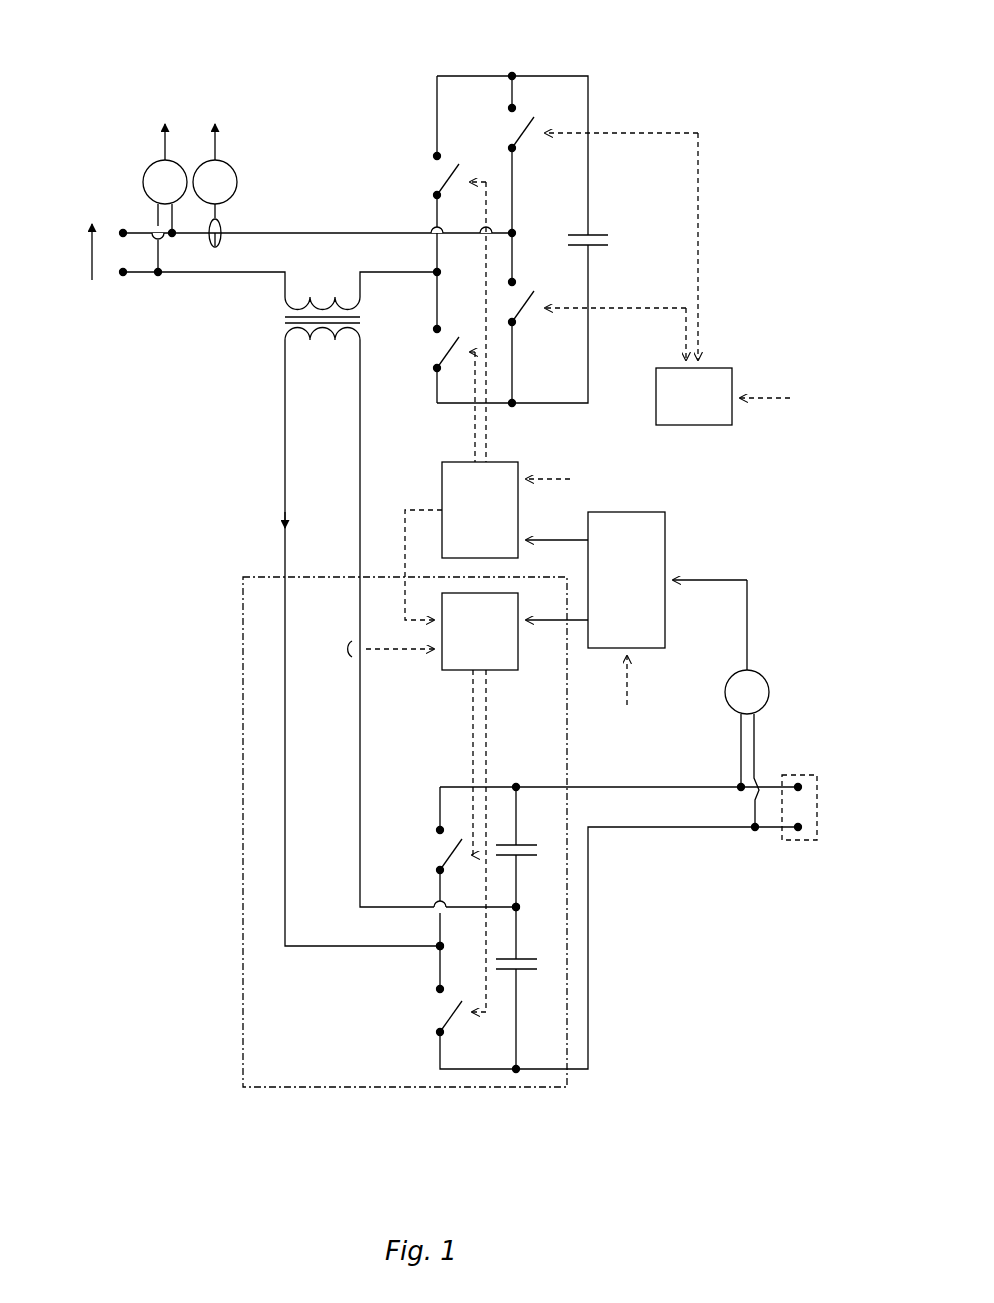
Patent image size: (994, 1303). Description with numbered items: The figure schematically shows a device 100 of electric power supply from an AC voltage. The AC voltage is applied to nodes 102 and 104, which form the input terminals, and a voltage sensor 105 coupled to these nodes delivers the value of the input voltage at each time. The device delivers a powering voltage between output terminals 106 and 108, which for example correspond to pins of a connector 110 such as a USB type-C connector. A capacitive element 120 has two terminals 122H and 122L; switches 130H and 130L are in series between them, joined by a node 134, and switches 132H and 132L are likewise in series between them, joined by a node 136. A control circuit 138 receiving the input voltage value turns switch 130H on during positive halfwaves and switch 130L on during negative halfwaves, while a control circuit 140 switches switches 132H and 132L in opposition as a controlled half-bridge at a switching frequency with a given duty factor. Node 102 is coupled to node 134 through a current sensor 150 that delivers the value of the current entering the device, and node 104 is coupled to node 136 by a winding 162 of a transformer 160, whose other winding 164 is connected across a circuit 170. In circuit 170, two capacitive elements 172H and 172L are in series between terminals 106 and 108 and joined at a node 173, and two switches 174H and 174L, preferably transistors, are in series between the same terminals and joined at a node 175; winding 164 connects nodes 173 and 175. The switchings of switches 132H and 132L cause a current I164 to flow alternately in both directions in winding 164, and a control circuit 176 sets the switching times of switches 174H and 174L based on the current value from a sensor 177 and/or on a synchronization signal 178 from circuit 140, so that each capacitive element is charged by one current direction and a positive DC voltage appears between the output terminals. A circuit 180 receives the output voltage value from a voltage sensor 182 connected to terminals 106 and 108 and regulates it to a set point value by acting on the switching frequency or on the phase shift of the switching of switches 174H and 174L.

The device 100 is at (178, 52).
The node 102 is at (123, 232).
The node 104 is at (123, 273).
The voltage sensor 105 is at (145, 175).
The current sensor 150 is at (236, 192).
The terminal 106 is at (817, 787).
The terminal 108 is at (817, 827).
The connector 110 is at (798, 840).
The capacitive element 120 is at (588, 240).
The terminal 122H is at (588, 100).
The terminal 122L is at (588, 340).
The switch 130H is at (505, 117).
The switch 130L is at (540, 290).
The switch 132H is at (430, 176).
The switch 132L is at (430, 348).
The node 134 is at (514, 232).
The node 136 is at (437, 258).
The control circuit 138 is at (700, 425).
The control circuit 140 is at (500, 475).
The transformer 160 is at (278, 335).
The winding 162 is at (285, 297).
The winding 164 is at (310, 345).
The current I164 is at (329, 643).
The circuit 170 is at (243, 605).
The capacitive element 172H is at (588, 870).
The capacitive element 172L is at (537, 969).
The node 173 is at (520, 906).
The switch 174H is at (430, 840).
The switch 174L is at (430, 1017).
The node 175 is at (438, 950).
The control circuit 176 is at (500, 673).
The sensor 177 is at (395, 660).
The signal 178 is at (405, 535).
The circuit 180 is at (648, 525).
The voltage sensor 182 is at (766, 707).